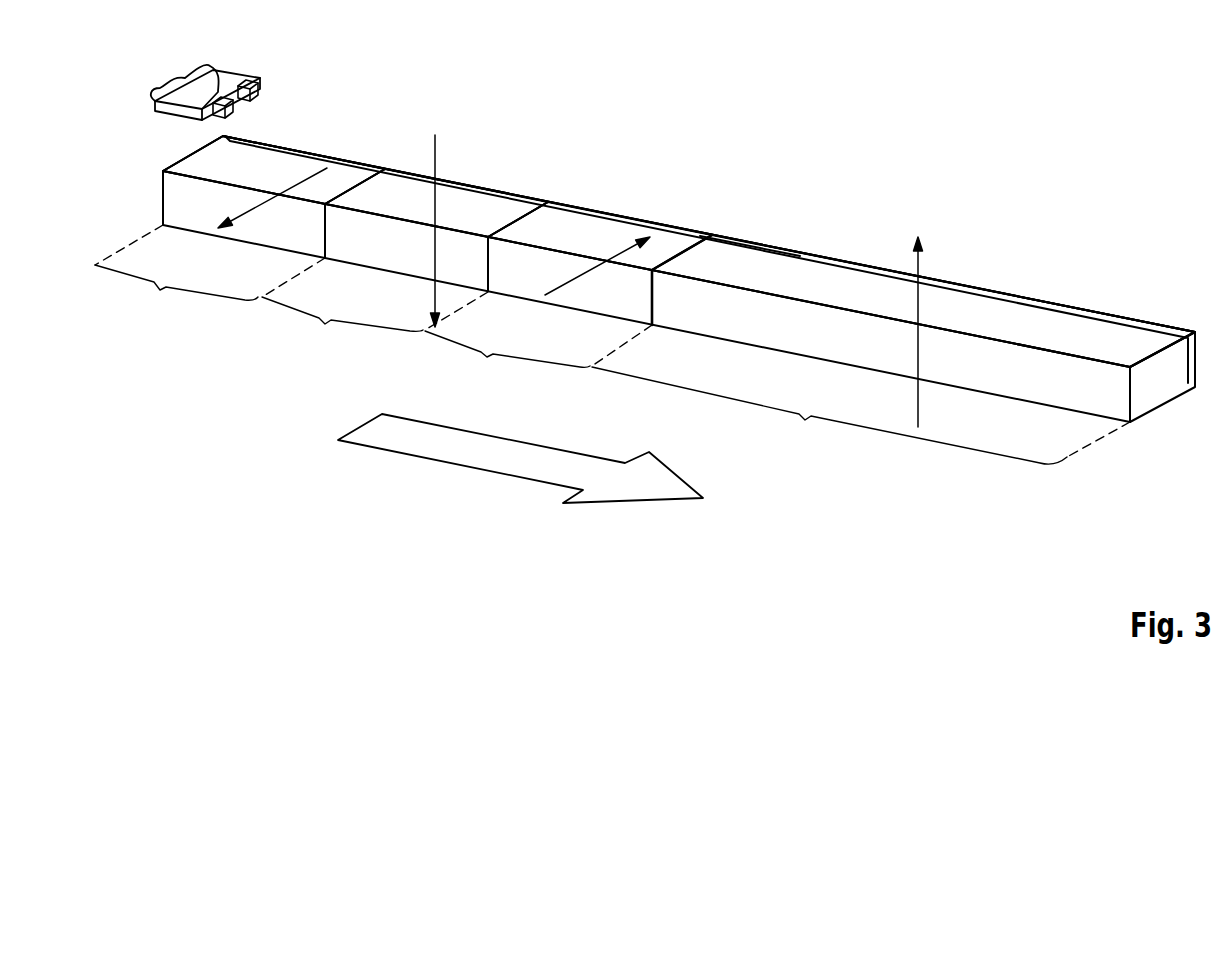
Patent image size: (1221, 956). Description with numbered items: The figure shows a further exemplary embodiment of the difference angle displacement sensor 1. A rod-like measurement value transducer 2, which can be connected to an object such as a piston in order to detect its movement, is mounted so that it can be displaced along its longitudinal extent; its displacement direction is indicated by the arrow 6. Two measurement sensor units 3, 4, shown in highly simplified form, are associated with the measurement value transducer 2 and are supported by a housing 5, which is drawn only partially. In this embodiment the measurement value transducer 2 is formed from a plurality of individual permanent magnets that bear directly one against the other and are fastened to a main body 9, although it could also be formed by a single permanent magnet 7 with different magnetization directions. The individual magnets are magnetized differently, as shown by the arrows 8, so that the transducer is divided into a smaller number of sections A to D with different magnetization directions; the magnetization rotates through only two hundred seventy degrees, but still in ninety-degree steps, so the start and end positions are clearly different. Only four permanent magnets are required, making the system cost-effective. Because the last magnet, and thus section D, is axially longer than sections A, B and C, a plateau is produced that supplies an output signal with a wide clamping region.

The displacement sensor 1 is at (146, 148).
The measurement value transducer 2 is at (738, 234).
The measurement sensor unit 3 is at (244, 75).
The measurement sensor unit 4 is at (222, 86).
The housing 5 is at (180, 90).
The arrow 6 is at (461, 451).
The permanent magnet 7 is at (835, 274).
The arrows 8 is at (301, 178).
The main body 9 is at (793, 250).